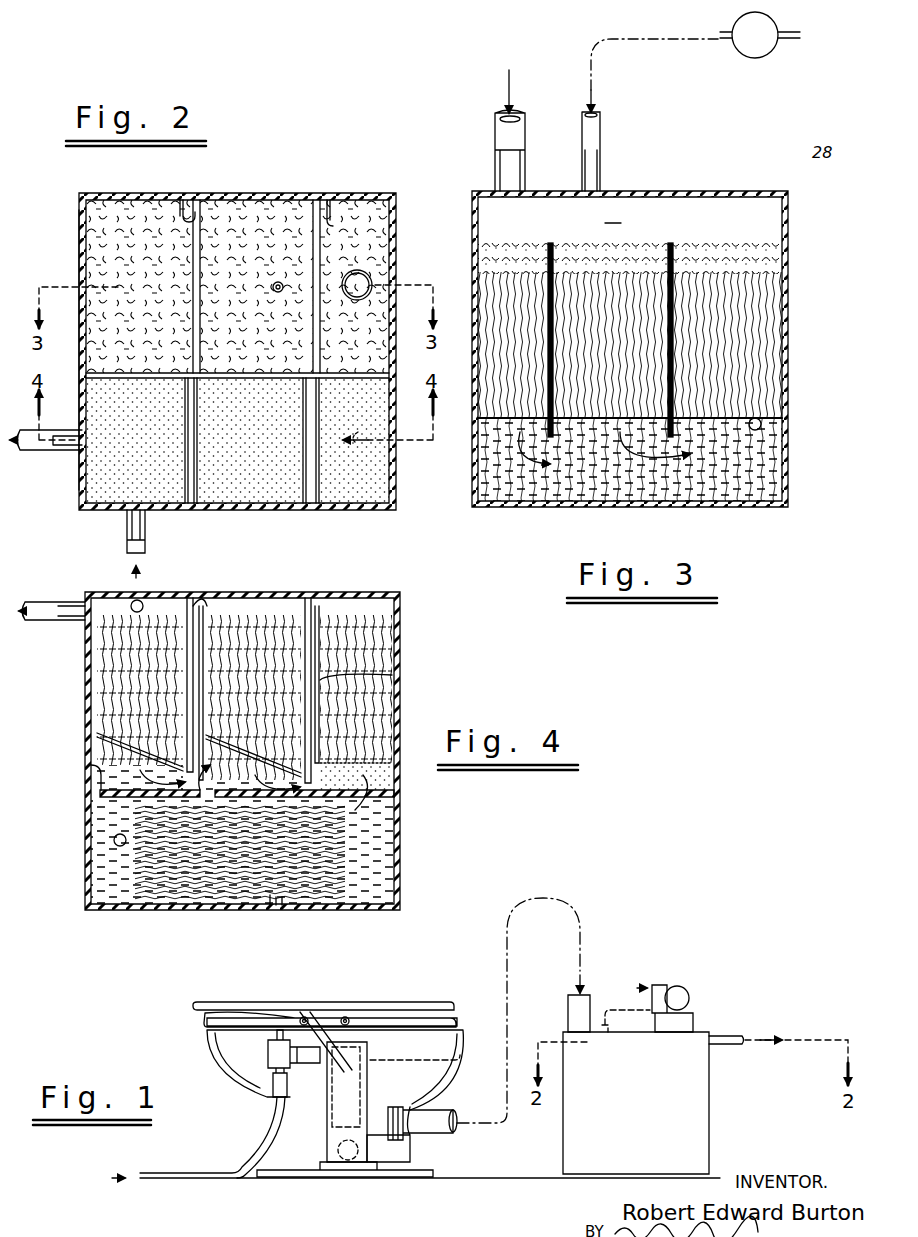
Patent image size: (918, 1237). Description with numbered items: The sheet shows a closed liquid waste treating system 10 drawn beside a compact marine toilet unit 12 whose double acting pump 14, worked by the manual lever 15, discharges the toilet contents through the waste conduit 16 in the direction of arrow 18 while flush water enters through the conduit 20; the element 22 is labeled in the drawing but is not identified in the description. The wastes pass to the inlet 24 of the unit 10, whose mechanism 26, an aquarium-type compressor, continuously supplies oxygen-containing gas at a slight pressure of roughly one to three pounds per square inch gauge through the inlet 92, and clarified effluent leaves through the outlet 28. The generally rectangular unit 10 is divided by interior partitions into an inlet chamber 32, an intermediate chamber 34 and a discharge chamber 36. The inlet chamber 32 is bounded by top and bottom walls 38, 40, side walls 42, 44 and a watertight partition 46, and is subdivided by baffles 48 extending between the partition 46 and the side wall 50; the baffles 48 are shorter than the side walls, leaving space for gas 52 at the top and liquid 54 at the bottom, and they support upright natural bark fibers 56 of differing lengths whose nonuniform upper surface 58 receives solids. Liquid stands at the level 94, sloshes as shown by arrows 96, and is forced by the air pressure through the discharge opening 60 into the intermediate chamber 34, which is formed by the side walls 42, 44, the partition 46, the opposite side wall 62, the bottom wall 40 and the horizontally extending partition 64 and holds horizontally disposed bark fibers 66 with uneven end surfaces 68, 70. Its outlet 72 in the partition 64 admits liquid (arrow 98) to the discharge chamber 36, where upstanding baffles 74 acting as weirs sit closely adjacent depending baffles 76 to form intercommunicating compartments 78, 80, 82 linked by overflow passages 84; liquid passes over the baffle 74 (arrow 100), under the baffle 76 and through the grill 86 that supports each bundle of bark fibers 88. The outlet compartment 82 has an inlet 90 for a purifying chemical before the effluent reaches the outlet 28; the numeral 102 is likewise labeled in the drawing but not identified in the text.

In FIG. 1, the liquid waste treating system 10 is at (700, 1017).
In FIG. 1, the toilet unit 12 is at (319, 1036).
In FIG. 1, the double acting pump 14 is at (327, 1127).
In FIG. 1, the manual lever 15 is at (203, 1003).
In FIG. 1, the waste conduit 16 is at (440, 1107).
In FIG. 3, the arrow 18 is at (512, 85).
In FIG. 1, the arrow 18 is at (577, 895).
In FIG. 1, the conduit 20 is at (217, 1170).
In FIG. 1, the water inlet 22 is at (127, 1185).
In FIG. 2, the inlet 24 is at (395, 275).
In FIG. 3, the inlet 24 is at (495, 137).
In FIG. 1, the inlet 24 is at (570, 1017).
In FIG. 3, the gas supply means 26 is at (755, 52).
In FIG. 1, the gas supply means 26 is at (665, 985).
In FIG. 2, the outlet 28 is at (35, 452).
In FIG. 4, the outlet 28 is at (40, 617).
In FIG. 1, the outlet 28 is at (727, 1042).
In FIG. 2, the inlet chamber 32 is at (253, 225).
In FIG. 3, the inlet chamber 32 is at (723, 200).
In FIG. 4, the intermediate chamber 34 is at (107, 872).
In FIG. 2, the discharge chamber 36 is at (250, 482).
In FIG. 4, the discharge chamber 36 is at (88, 757).
In FIG. 3, the top wall 38 is at (663, 191).
In FIG. 4, the top wall 38 is at (315, 600).
In FIG. 3, the bottom wall 40 is at (727, 507).
In FIG. 4, the bottom wall 40 is at (238, 908).
In FIG. 2, the side wall 42 is at (395, 230).
In FIG. 3, the side wall 42 is at (473, 482).
In FIG. 2, the side wall 44 is at (80, 250).
In FIG. 3, the side wall 44 is at (790, 355).
In FIG. 2, the partition 46 is at (105, 365).
In FIG. 3, the partition 46 is at (615, 214).
In FIG. 4, the partition 46 is at (387, 870).
In FIG. 2, the baffles 48 is at (190, 194).
In FIG. 3, the baffles 48 is at (550, 243).
In FIG. 2, the side wall 50 is at (213, 193).
In FIG. 3, the gas space 52 is at (547, 210).
In FIG. 3, the liquid 54 is at (583, 500).
In FIG. 3, the bark fibers 56 is at (724, 341).
In FIG. 3, the nonuniform upper surface 58 is at (509, 263).
In FIG. 3, the discharge opening 60 is at (787, 438).
In FIG. 4, the discharge opening 60 is at (115, 840).
In FIG. 2, the side wall 62 is at (286, 510).
In FIG. 4, the horizontal partition 64 is at (110, 772).
In FIG. 4, the bark fibers 66 is at (273, 903).
In FIG. 4, the uneven surface 68 is at (140, 873).
In FIG. 4, the uneven surface 70 is at (360, 883).
In FIG. 2, the outlet 72 is at (391, 457).
In FIG. 4, the outlet 72 is at (362, 787).
In FIG. 4, the upstanding baffles 74 is at (88, 810).
In FIG. 4, the depending baffles 76 is at (163, 600).
In FIG. 2, the compartment 78 is at (359, 500).
In FIG. 4, the compartment 78 is at (375, 600).
In FIG. 2, the compartment 80 is at (228, 490).
In FIG. 4, the compartment 80 is at (260, 603).
In FIG. 2, the outlet compartment 82 is at (100, 487).
In FIG. 4, the outlet compartment 82 is at (107, 603).
In FIG. 4, the overflow passages 84 is at (193, 713).
In FIG. 4, the grill 86 is at (88, 747).
In FIG. 4, the bark fibers 88 is at (95, 683).
In FIG. 2, the chemical inlet 90 is at (127, 542).
In FIG. 4, the chemical inlet 90 is at (120, 580).
In FIG. 2, the air inlet 92 is at (282, 282).
In FIG. 3, the air inlet 92 is at (597, 137).
In FIG. 3, the liquid level 94 is at (733, 417).
In FIG. 3, the arrows 96 is at (535, 502).
In FIG. 3, the arrow 98 is at (657, 507).
In FIG. 4, the arrow 98 is at (363, 833).
In FIG. 4, the arrow 100 is at (340, 603).
In FIG. 4, the passage 102 is at (213, 595).